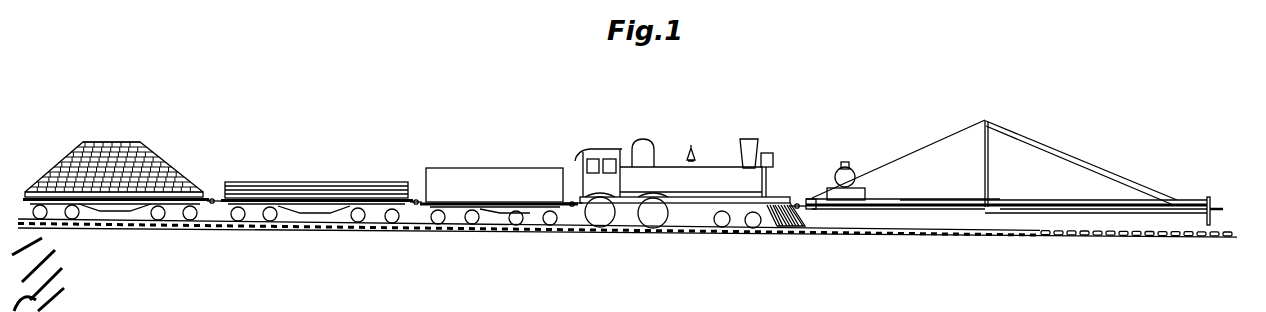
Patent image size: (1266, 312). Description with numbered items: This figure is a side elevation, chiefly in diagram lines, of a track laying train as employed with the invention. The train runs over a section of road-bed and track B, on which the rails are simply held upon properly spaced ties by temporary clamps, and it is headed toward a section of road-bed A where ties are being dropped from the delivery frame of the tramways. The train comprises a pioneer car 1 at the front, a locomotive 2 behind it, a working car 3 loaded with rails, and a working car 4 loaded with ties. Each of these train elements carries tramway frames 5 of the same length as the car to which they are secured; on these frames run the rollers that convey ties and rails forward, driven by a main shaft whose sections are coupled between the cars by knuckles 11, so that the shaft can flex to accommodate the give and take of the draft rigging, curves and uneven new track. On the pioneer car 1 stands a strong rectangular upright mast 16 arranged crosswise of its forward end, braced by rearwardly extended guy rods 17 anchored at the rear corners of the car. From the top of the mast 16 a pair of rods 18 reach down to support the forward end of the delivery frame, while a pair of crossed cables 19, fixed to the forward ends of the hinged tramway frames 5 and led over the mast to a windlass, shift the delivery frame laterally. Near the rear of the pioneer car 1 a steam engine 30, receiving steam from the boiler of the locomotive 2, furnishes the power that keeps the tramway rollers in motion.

The pioneer car 1 is at (924, 199).
The locomotive 2 is at (523, 173).
The working car loaded with rails 3 is at (304, 184).
The working car loaded with ties 4 is at (146, 158).
The tramway frames 5 is at (228, 198).
The knuckles 11 is at (212, 204).
The mast 16 is at (989, 163).
The guy rods 17 is at (943, 138).
The rods 18 is at (1001, 126).
The crossed cables 19 is at (1144, 185).
The steam engine 30 is at (848, 163).
The section of the road-bed A is at (1158, 236).
The section of the road-bed and track B is at (340, 229).